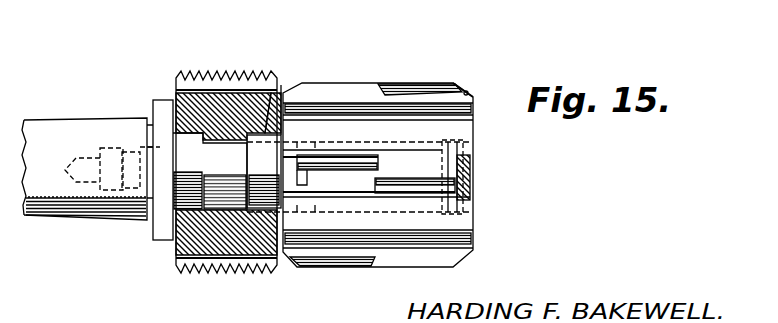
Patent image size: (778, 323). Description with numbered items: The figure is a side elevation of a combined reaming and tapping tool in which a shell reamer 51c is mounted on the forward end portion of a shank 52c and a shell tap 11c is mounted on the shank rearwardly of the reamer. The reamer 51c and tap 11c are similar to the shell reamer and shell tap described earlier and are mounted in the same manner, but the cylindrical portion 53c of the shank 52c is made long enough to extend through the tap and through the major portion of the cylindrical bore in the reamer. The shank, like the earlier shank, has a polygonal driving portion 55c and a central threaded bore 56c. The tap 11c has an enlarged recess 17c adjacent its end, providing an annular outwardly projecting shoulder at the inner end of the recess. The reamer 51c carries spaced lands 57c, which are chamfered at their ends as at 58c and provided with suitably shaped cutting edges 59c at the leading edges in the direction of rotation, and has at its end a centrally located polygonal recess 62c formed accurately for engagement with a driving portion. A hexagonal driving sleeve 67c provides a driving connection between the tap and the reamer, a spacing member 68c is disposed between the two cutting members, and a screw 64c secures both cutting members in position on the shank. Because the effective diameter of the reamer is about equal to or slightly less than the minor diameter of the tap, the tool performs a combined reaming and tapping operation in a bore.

The shell tap 11c is at (231, 69).
The recess 17c is at (266, 208).
The shell reamer 51c is at (358, 116).
The shank 52c is at (68, 203).
The cylindrical portion 53c is at (228, 186).
The polygonal driving portion 55c is at (185, 197).
The central threaded bore 56c is at (112, 150).
The lands 57c is at (351, 267).
The chamfer 58c is at (467, 91).
The cutting edges 59c is at (478, 101).
The polygonal recess 62c is at (471, 141).
The screw 64c is at (471, 206).
The hexagonal driving sleeve 67c is at (276, 103).
The spacing member 68c is at (297, 112).